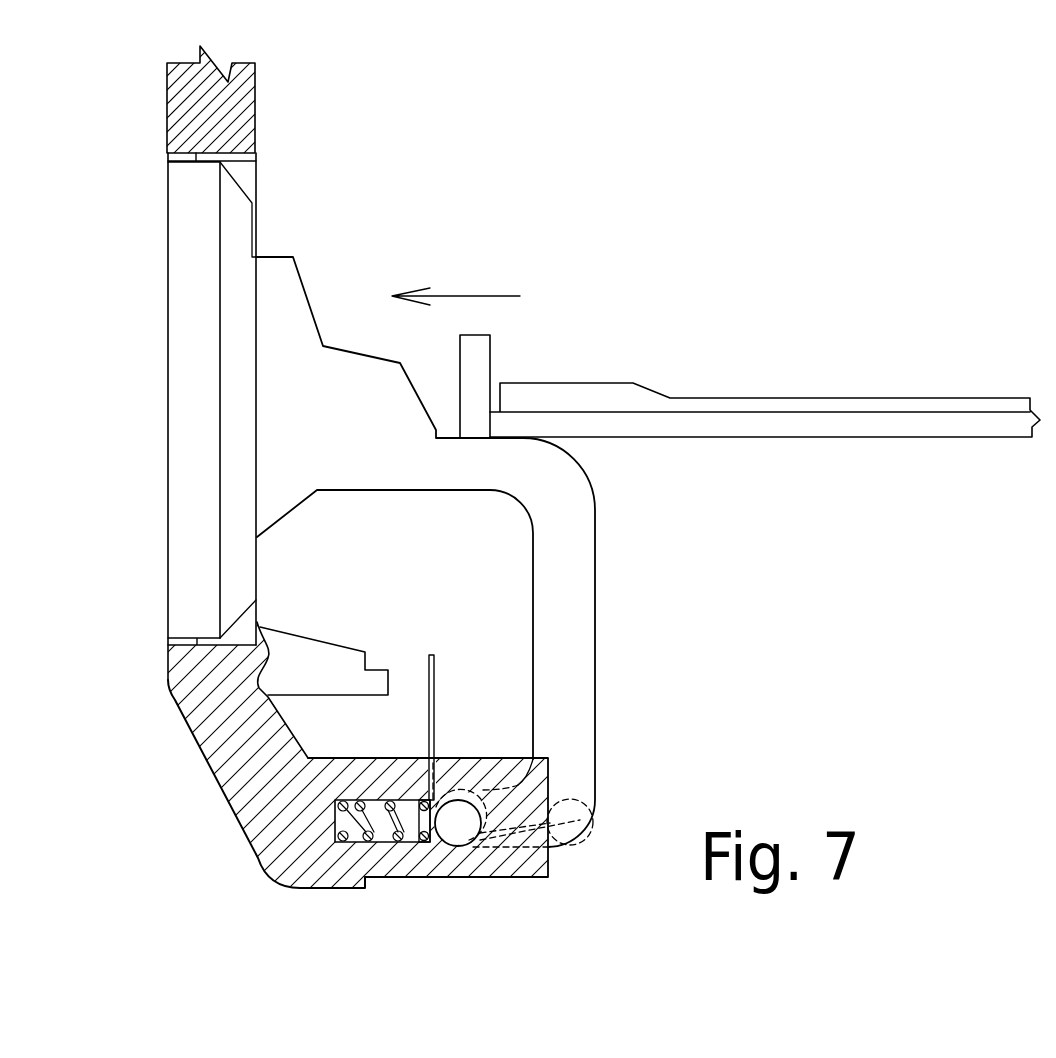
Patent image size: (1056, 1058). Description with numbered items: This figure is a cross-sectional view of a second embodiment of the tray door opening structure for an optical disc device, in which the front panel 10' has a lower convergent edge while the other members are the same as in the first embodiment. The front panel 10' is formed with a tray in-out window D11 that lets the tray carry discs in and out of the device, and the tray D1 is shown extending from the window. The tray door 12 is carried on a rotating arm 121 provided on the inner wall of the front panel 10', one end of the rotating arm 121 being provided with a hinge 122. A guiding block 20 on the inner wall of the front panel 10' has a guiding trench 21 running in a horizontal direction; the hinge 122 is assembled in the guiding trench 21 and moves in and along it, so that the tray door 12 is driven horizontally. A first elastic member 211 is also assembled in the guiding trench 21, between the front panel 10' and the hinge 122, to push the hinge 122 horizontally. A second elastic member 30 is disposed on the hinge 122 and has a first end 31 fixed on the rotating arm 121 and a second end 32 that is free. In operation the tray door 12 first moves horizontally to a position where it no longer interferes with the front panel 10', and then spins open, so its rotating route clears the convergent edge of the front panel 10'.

The tray door 12 is at (182, 388).
The tray in-out window D11 is at (243, 178).
The sliding plate / disk tray D1 is at (727, 410).
The rotating arm 121 is at (572, 636).
The front panel 10' is at (317, 755).
The guiding block 20 is at (517, 862).
The second elastic member 30 is at (426, 665).
The second end 32 is at (437, 698).
The guiding trench 21 is at (400, 805).
The first elastic member 211 is at (422, 800).
The first end 31 is at (590, 808).
The hinge 122 is at (458, 824).